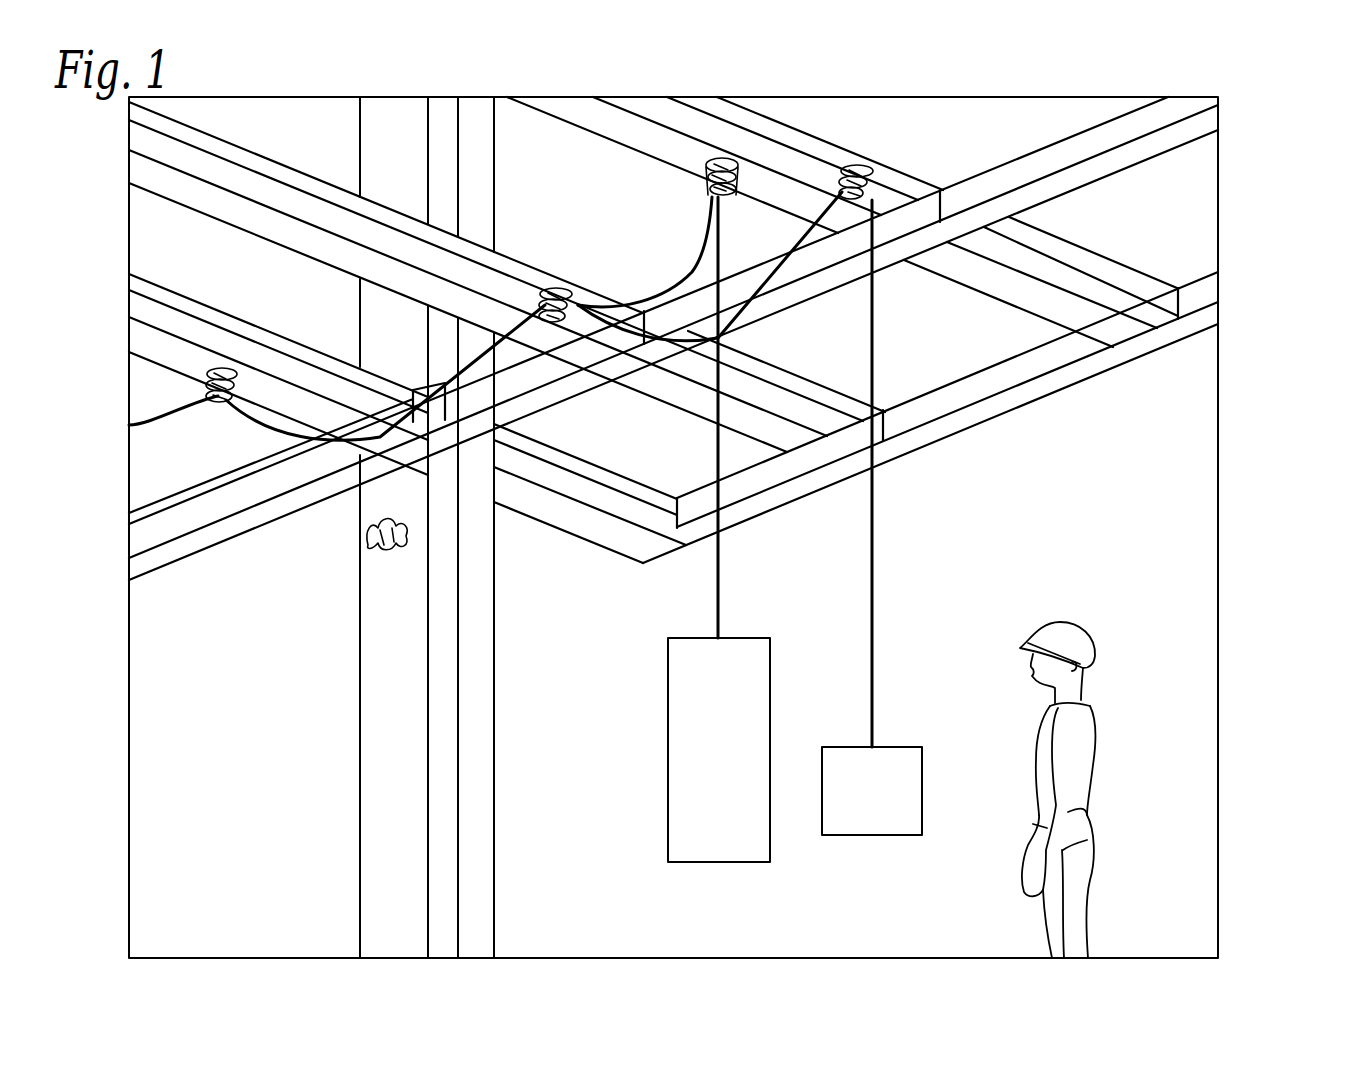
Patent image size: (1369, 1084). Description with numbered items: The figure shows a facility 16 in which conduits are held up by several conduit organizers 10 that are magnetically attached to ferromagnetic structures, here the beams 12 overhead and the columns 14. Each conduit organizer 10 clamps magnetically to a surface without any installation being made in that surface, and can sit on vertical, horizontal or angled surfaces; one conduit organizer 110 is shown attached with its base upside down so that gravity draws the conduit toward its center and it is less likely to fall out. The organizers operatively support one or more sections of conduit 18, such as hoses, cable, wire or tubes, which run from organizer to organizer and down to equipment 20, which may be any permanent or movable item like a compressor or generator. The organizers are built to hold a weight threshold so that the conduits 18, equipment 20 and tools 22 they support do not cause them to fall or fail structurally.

The conduit organizer 10 is at (520, 316).
The conduit organizer 110 is at (736, 150).
The beams 12 is at (667, 106).
The columns 14 is at (396, 126).
The facility 16 is at (1252, 138).
The conduit 18 is at (790, 276).
The equipment 20 is at (668, 664).
The tools 22 is at (896, 748).